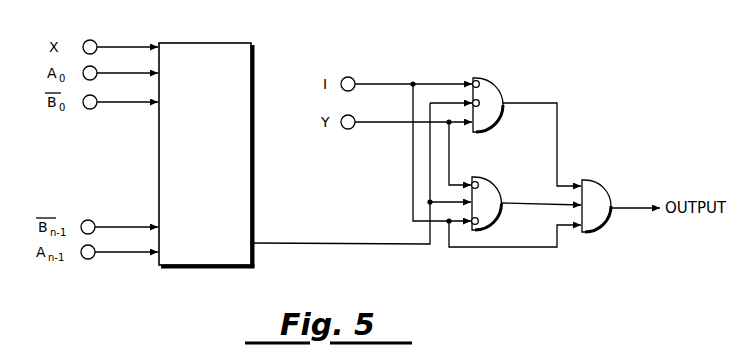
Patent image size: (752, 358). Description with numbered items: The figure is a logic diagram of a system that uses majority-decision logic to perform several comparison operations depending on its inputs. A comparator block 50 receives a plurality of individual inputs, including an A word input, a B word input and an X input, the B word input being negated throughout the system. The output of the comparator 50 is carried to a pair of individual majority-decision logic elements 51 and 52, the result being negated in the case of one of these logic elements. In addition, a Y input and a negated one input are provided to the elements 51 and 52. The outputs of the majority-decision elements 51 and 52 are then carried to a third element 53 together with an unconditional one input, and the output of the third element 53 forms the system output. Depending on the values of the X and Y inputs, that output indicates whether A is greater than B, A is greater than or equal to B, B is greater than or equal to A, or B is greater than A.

The comparator block 50 is at (210, 43).
The majority-decision logic element 51 is at (494, 180).
The majority-decision logic element 52 is at (496, 82).
The third element 53 is at (604, 183).